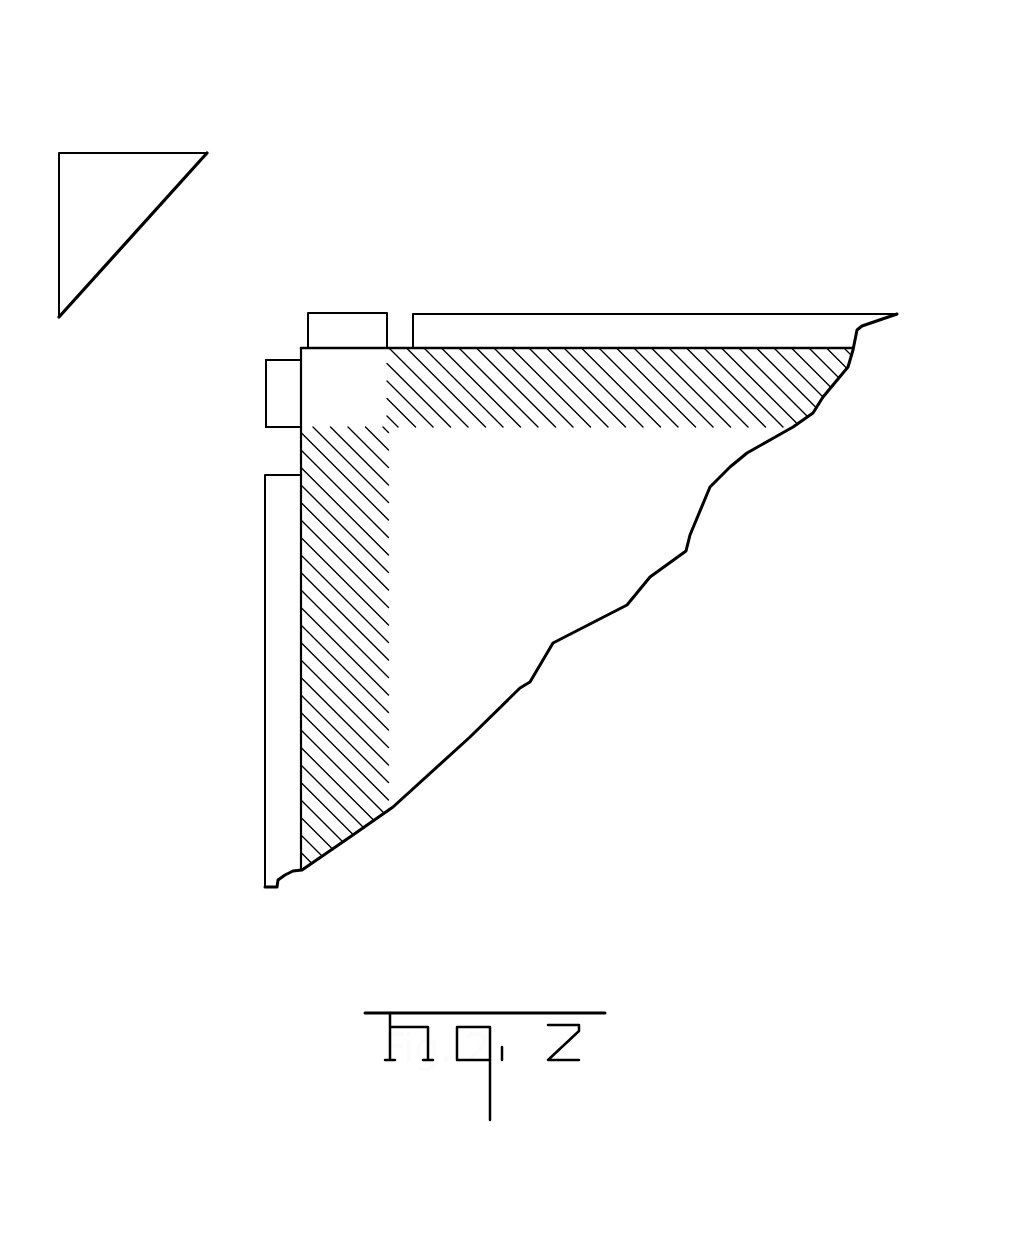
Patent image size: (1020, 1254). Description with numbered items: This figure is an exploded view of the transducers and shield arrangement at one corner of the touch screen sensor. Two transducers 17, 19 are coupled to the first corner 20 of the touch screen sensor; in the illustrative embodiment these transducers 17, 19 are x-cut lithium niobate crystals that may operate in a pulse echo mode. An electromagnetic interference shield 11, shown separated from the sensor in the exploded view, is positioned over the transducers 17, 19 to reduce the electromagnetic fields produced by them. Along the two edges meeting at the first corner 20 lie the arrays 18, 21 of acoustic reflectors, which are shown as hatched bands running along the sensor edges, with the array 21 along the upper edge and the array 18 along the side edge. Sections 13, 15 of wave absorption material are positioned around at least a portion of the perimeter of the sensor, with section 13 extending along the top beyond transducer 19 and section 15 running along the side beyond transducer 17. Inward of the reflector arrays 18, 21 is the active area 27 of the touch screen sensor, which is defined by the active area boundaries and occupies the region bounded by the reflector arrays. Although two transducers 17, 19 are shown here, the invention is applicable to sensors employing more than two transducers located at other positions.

The electromagnetic interference shield 11 is at (120, 153).
The section of wave absorption material 13 is at (597, 313).
The section of wave absorption material 15 is at (265, 717).
The transducer 17 is at (283, 410).
The array of acoustic reflectors 18 is at (398, 705).
The transducer 19 is at (362, 313).
The first corner 20 is at (253, 373).
The array of acoustic reflectors 21 is at (692, 433).
The active area 27 is at (547, 540).